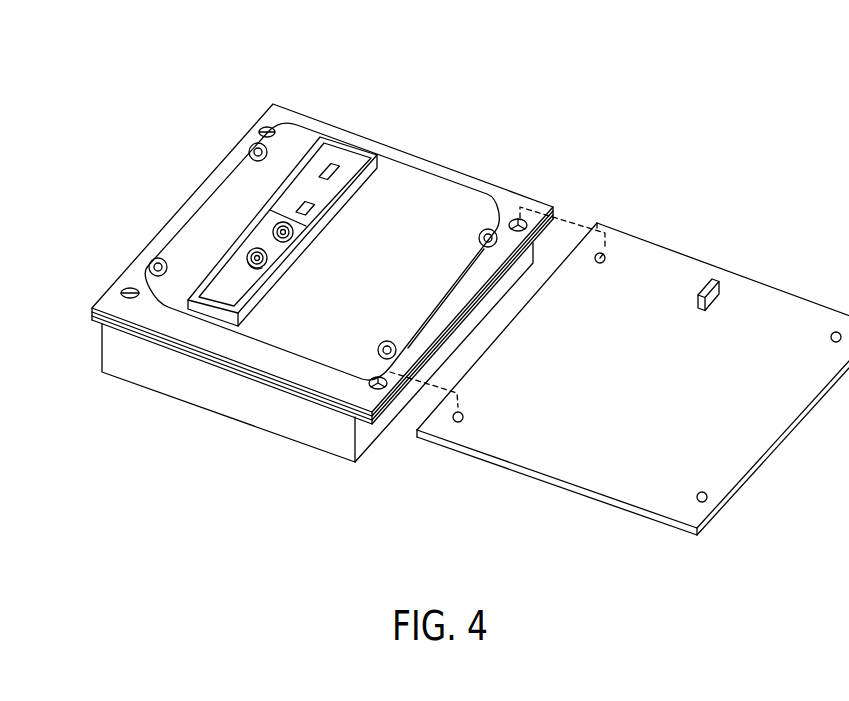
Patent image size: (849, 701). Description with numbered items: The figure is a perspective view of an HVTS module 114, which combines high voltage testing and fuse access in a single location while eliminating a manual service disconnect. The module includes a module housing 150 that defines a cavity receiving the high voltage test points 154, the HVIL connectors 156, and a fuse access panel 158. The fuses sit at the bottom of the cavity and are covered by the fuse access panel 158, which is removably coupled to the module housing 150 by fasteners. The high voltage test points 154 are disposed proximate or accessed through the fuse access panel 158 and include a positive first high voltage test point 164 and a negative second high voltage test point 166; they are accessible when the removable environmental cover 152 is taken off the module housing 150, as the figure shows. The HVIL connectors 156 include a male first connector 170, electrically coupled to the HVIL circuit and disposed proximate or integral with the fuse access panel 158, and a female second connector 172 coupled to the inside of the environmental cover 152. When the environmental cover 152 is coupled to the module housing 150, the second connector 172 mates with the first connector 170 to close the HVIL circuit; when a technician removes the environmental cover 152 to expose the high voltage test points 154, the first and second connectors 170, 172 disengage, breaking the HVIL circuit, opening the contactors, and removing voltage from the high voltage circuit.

The HVTS module 114 is at (524, 100).
The module housing 150 is at (475, 317).
The removable environmental cover 152 is at (678, 284).
The high voltage test points 154 is at (240, 219).
The HVIL connectors 156 is at (311, 158).
The fuse access panel 158 is at (413, 212).
The positive first high voltage test point 164 is at (288, 240).
The negative second high voltage test point 166 is at (250, 267).
The first connector 170 is at (329, 162).
The second connector 172 is at (707, 313).